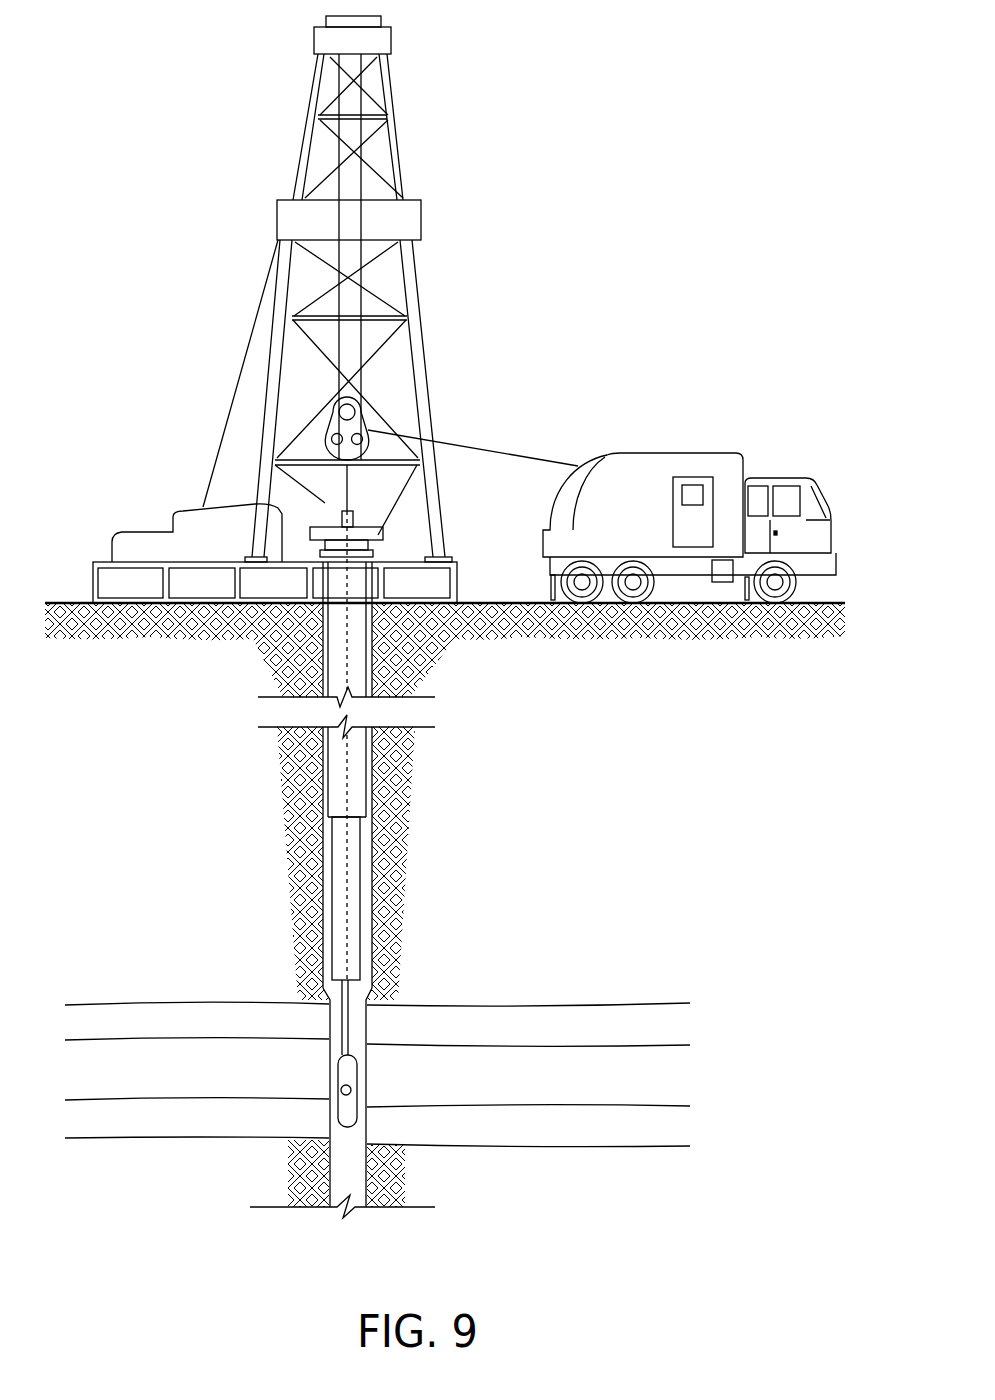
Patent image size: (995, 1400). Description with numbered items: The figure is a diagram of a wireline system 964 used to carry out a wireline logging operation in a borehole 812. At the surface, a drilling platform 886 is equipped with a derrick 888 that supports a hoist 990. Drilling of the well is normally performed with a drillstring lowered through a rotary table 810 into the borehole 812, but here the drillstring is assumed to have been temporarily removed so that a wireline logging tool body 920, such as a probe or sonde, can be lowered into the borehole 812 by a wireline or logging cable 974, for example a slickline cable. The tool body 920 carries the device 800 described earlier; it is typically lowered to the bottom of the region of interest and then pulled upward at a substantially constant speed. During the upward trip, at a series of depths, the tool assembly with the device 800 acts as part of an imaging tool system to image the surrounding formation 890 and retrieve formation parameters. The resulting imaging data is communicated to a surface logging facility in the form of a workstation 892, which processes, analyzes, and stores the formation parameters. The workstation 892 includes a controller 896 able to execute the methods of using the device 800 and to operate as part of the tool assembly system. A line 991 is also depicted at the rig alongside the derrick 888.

The wireline system 964 is at (628, 222).
The hoist 990 is at (358, 405).
The drilling line / cover 991 is at (338, 512).
The wireline or logging cable 974 is at (473, 447).
The rotary table 810 is at (380, 526).
The derrick 888 is at (444, 553).
The drilling platform 886 is at (461, 585).
The workstation 892 is at (715, 472).
The controller 896 is at (692, 485).
The borehole 812 is at (329, 1018).
The wireline logging tool body 920 is at (358, 1062).
The device 800 is at (351, 1089).
The subterranean formation 890 is at (690, 1003).